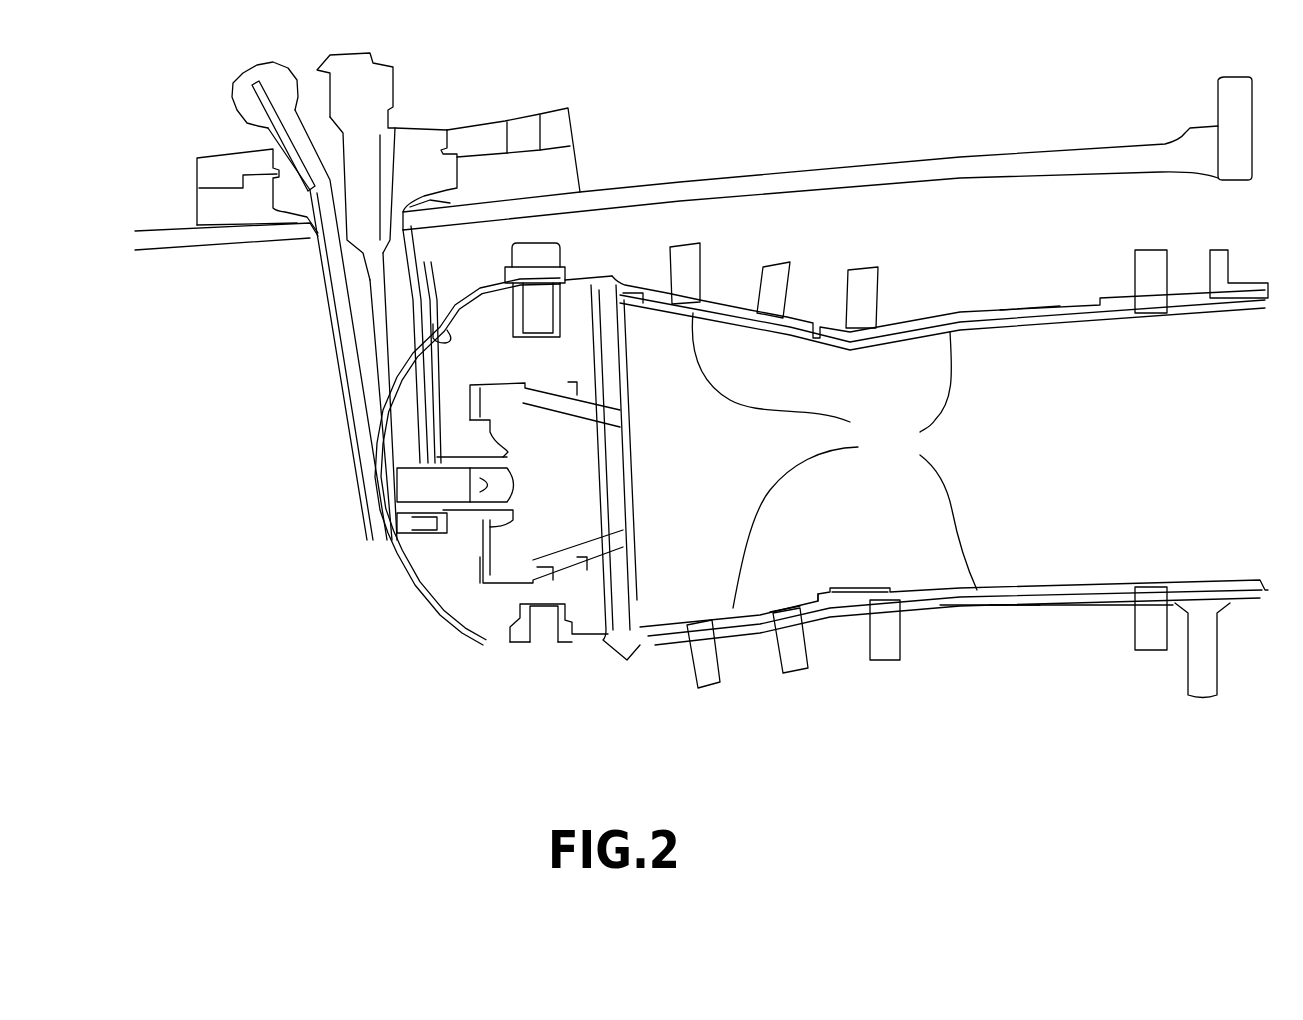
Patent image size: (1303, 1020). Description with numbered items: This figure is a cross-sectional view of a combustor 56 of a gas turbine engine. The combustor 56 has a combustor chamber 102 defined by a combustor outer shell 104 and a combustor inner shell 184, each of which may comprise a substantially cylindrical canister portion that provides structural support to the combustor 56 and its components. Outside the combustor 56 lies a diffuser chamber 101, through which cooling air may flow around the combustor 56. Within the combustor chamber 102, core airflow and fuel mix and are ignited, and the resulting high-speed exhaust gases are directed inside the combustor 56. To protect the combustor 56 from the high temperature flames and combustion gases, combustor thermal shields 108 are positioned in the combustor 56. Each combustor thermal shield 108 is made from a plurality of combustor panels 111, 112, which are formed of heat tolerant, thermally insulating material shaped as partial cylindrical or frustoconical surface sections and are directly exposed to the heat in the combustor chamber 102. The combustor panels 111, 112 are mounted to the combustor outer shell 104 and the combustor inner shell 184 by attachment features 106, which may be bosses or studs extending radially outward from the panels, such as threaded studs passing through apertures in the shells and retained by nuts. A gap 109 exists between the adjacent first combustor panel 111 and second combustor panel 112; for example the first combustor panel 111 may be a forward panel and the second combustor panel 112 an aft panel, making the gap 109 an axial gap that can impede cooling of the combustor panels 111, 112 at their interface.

The combustor 56 is at (1078, 190).
The diffuser chamber 101 is at (971, 235).
The combustor chamber 102 is at (1105, 466).
The combustor outer shell 104 is at (1028, 305).
The attachment feature 106 is at (712, 268).
The combustor thermal shield 108 is at (834, 460).
The gap 109 is at (823, 596).
The first combustor panel 111 is at (786, 602).
The second combustor panel 112 is at (912, 588).
The combustor inner shell 184 is at (1007, 607).